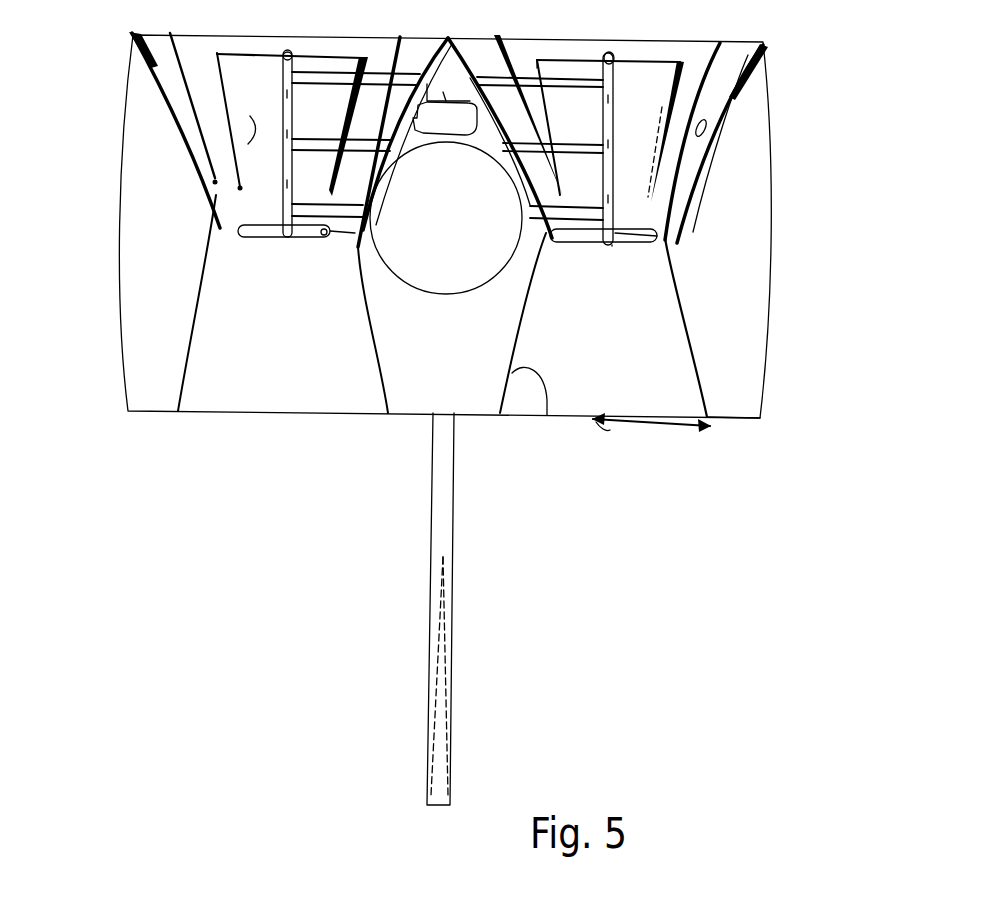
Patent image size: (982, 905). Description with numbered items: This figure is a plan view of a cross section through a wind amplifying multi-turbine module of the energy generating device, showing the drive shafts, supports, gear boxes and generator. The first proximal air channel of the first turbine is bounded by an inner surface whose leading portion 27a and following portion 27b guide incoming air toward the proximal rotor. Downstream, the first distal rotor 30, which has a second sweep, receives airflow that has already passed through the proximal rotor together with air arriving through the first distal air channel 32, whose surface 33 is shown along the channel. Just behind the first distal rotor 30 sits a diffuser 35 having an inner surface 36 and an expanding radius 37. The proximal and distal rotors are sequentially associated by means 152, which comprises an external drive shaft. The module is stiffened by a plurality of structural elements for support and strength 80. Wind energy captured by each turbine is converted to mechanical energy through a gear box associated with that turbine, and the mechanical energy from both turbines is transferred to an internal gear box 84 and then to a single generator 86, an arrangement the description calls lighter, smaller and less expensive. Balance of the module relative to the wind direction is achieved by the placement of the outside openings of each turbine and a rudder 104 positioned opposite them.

The leading portion 27a is at (220, 47).
The following portion 27b is at (283, 152).
The means for sequentially associating said rotors 152 is at (283, 97).
The structural elements for support and strength 80 is at (320, 153).
The internal gear box 84 is at (446, 95).
The generator 86 is at (447, 127).
The first distal rotor 30 is at (612, 245).
The first distal air channel 32 is at (745, 52).
The surface 33 is at (700, 128).
The diffuser 35 is at (678, 374).
The inner surface 36 is at (547, 415).
The expanding radius 37 is at (650, 426).
The rudder 104 is at (435, 700).